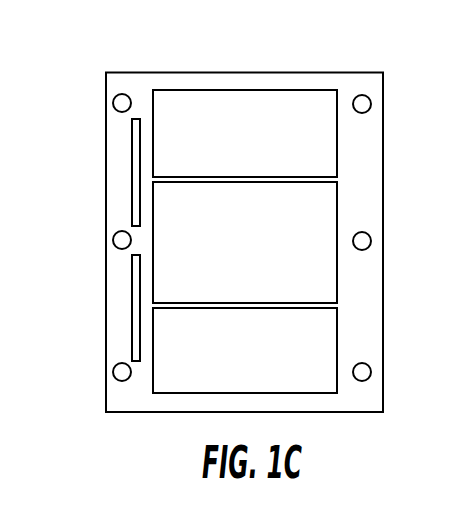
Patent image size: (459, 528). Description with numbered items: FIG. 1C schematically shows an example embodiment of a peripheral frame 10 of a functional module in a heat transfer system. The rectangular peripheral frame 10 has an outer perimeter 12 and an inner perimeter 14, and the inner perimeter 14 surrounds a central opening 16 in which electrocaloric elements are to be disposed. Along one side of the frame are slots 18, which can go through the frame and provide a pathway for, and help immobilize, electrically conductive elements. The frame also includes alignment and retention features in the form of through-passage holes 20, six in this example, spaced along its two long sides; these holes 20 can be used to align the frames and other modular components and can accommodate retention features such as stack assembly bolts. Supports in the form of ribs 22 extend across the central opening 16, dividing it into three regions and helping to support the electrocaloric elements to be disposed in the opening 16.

The peripheral frame 10 is at (183, 83).
The outer perimeter 12 is at (106, 224).
The inner perimeter 14 is at (156, 240).
The central opening 16 is at (230, 232).
The slots 18 is at (134, 150).
The holes 20 is at (113, 100).
The ribs 22 is at (289, 178).